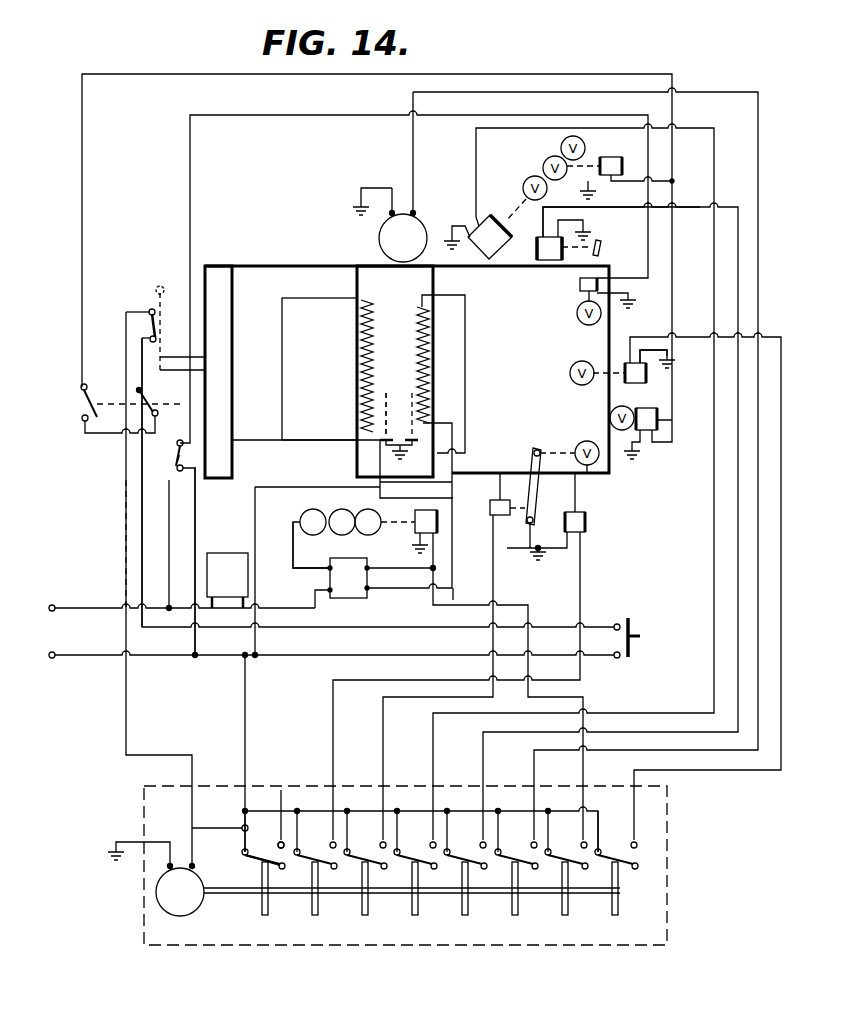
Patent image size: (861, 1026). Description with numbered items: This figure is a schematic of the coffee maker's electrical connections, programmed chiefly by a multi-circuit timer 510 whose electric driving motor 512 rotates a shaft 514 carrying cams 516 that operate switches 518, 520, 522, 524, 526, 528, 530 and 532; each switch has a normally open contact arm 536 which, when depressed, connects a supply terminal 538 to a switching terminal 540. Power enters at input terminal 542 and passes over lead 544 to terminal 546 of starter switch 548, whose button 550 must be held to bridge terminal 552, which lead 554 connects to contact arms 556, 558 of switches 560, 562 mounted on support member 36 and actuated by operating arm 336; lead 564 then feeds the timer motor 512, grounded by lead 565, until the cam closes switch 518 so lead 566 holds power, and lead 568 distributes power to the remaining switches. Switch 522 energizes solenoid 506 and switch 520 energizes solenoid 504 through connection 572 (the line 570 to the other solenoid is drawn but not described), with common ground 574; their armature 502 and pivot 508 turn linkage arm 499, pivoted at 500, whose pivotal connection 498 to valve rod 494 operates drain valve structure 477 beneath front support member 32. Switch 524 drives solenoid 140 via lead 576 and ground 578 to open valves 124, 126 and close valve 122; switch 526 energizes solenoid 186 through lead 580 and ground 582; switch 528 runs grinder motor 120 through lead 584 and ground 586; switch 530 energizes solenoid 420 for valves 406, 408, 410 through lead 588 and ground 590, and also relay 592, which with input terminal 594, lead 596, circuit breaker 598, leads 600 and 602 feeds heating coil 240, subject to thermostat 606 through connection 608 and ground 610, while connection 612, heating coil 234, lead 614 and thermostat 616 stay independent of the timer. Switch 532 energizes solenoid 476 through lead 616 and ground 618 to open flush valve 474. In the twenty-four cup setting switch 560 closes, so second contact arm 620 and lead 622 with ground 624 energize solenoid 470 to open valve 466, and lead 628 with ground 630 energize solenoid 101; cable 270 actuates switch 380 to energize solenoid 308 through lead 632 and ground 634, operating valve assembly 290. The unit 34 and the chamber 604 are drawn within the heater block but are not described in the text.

The front support member 32 is at (609, 398).
The housing 34 is at (408, 301).
The support member 36 is at (220, 373).
The solenoid 101 is at (606, 157).
The grinder motor 120 is at (379, 237).
The valve 122 is at (561, 144).
The slide valve 124 is at (543, 164).
The valve 126 is at (523, 186).
The solenoid 140 is at (480, 216).
The solenoid 186 is at (537, 252).
The heating coil 234 is at (430, 342).
The heating coil 240 is at (361, 376).
The actuating cable 270 is at (170, 452).
The valve assembly 290 is at (580, 330).
The solenoid 308 is at (580, 302).
The operating arm 336 is at (171, 276).
The switch 380 is at (171, 475).
The valve 406 is at (294, 522).
The valve 408 is at (335, 497).
The valve 410 is at (342, 536).
The solenoid 420 is at (416, 540).
The valve 466 is at (612, 419).
The solenoid 470 is at (657, 425).
The flush valve 474 is at (572, 368).
The solenoid 476 is at (635, 383).
The drain valve structure 477 is at (592, 466).
The valve rod 494 is at (580, 442).
The pivotal connection 498 is at (535, 448).
The linkage arm 499 is at (530, 460).
The central pivot 500 is at (527, 475).
The armature 502 is at (582, 512).
The solenoid 504 is at (585, 524).
The solenoid 506 is at (505, 488).
The pivotal connection 508 is at (528, 526).
The multi-circuit timer 510 is at (340, 953).
The timer motor 512 is at (170, 912).
The shaft 514 is at (246, 894).
The cams 516 is at (262, 900).
The timer switch 518 is at (262, 859).
The timer switch 520 is at (310, 862).
The timer switch 522 is at (361, 862).
The timer switch 524 is at (411, 862).
The timer switch 526 is at (461, 862).
The timer switch 528 is at (512, 862).
The timer switch 530 is at (562, 862).
The timer switch 532 is at (612, 862).
The contact arm 536 is at (267, 838).
The supply terminal 538 is at (244, 850).
The switching terminal 540 is at (283, 792).
The input terminal 542 is at (50, 658).
The lead 544 is at (173, 657).
The first terminal 546 is at (617, 658).
The starter switch 548 is at (639, 608).
The operating button 550 is at (642, 636).
The terminal 552 is at (617, 623).
The lead 554 is at (380, 628).
The contact arm 556 is at (182, 404).
The contact arm 558 is at (164, 333).
The switch 560 is at (111, 394).
The switch 562 is at (106, 311).
The lead 564 is at (126, 539).
The ground lead 565 is at (124, 840).
The lead 566 is at (245, 715).
The lead 568 is at (310, 810).
The conductor 570 is at (335, 706).
The connection 572 is at (385, 728).
The common ground connection 574 is at (538, 565).
The lead 576 is at (434, 740).
The ground connection 578 is at (452, 226).
The connection lead 580 is at (487, 750).
The ground connection 582 is at (585, 226).
The lead 584 is at (537, 760).
The ground connection 586 is at (372, 186).
The lead 588 is at (588, 773).
The ground connection 590 is at (440, 528).
The relay 592 is at (350, 598).
The input terminal 594 is at (50, 611).
The lead 596 is at (96, 610).
The heavy duty circuit breaker 598 is at (240, 543).
The lead 600 is at (315, 600).
The lead 602 is at (330, 570).
The chamber 604 is at (282, 350).
The thermostat 606 is at (388, 392).
The connection 608 is at (396, 590).
The ground connection 610 is at (392, 449).
The connection 612 is at (200, 497).
The lead 614 is at (465, 380).
The thermostat 616 is at (755, 772).
The ground connection 618 is at (656, 343).
The second contact arm 620 is at (76, 409).
The lead 622 is at (82, 247).
The ground connection 624 is at (645, 455).
The lead 628 is at (640, 207).
The ground connection 630 is at (586, 197).
The lead 632 is at (190, 200).
The ground connection 634 is at (630, 293).